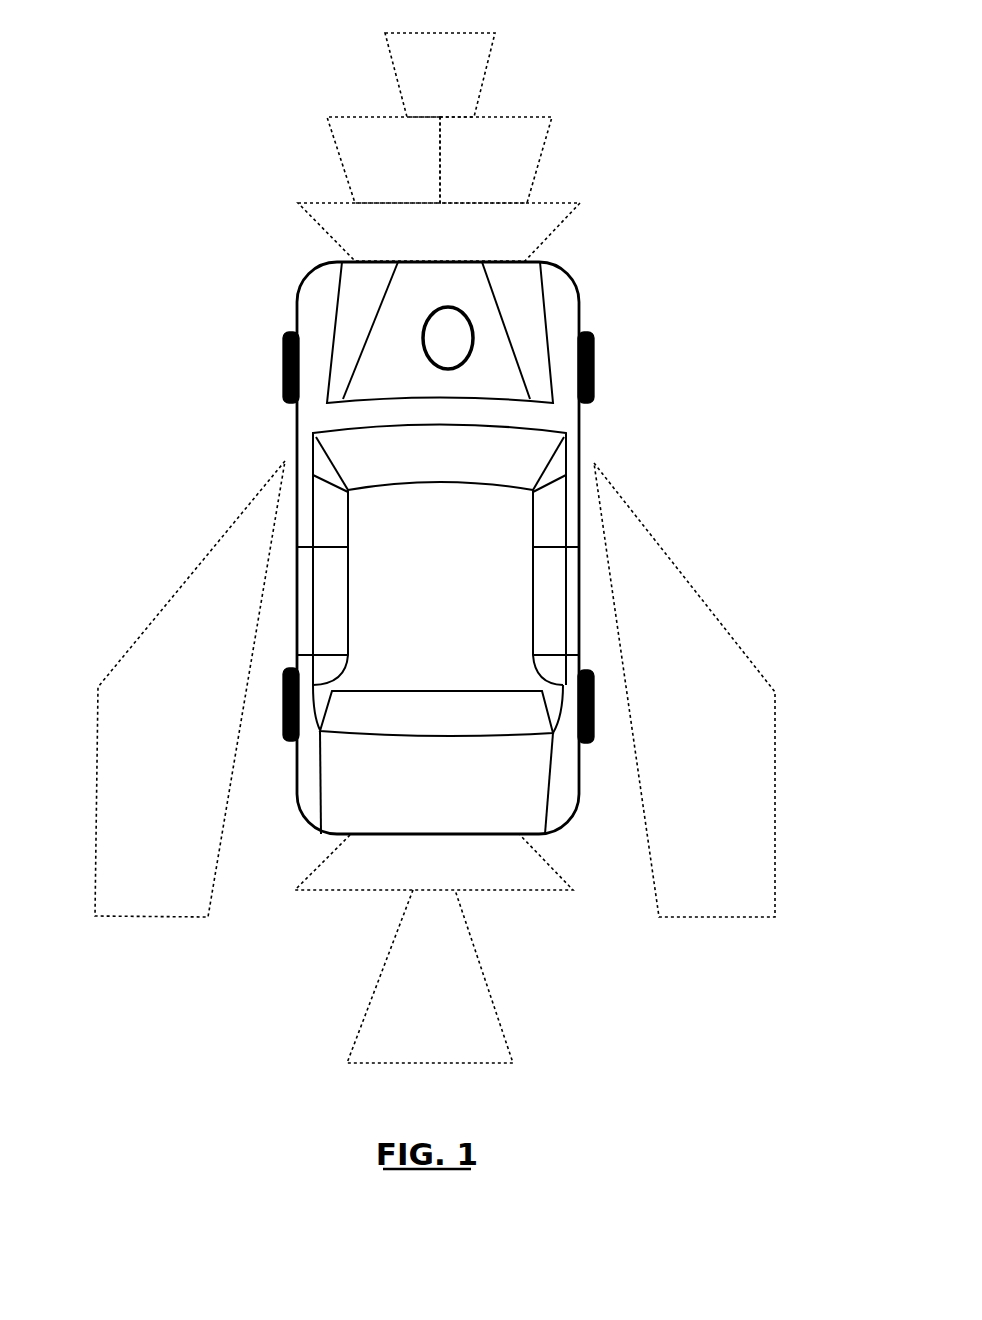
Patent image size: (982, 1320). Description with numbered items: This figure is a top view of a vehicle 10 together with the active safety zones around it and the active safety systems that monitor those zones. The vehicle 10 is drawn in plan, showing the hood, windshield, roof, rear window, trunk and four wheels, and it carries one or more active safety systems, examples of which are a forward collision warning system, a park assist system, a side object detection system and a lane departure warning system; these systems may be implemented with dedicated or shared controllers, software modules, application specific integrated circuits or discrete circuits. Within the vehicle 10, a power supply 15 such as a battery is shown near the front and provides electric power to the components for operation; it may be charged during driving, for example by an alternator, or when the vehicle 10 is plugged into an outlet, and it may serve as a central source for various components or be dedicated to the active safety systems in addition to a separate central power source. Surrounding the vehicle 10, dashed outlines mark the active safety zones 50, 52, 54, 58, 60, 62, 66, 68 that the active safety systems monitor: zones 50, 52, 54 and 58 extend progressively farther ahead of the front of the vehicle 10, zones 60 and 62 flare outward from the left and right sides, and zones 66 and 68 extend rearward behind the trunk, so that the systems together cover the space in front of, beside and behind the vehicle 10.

The vehicle 10 is at (620, 260).
The power supply 15 is at (423, 338).
The short-range front sensor field of view 50 is at (555, 233).
The left front sensor field of view 52 is at (338, 145).
The right front sensor field of view 54 is at (543, 153).
The long-range front sensor field of view 58 is at (490, 63).
The left side sensor field of view 60 is at (185, 553).
The right side sensor field of view 62 is at (642, 522).
The short-range rear sensor field of view 66 is at (503, 892).
The long-range rear sensor field of view 68 is at (490, 993).